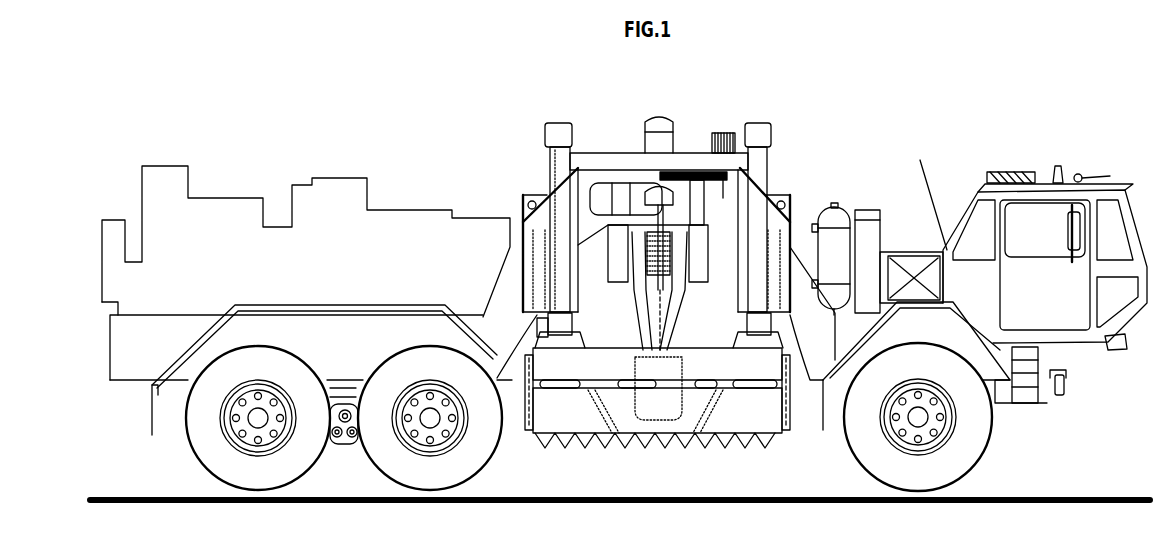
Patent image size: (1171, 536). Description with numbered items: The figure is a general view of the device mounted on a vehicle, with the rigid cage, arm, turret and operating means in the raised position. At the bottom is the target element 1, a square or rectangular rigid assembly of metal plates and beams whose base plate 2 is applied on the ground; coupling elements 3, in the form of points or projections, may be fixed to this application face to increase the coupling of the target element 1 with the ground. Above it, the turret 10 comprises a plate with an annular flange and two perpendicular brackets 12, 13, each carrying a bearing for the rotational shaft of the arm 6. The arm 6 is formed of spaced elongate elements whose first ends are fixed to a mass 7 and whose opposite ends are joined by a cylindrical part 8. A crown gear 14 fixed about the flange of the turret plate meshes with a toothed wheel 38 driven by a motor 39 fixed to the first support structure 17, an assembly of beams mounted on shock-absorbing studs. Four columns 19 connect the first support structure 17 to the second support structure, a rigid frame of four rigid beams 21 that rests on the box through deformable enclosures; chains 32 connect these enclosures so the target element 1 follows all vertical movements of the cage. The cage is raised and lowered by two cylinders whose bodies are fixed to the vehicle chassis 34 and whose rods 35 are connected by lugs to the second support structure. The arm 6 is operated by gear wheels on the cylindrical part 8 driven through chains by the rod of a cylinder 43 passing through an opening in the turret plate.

The target element 1 is at (544, 445).
The base plate 2 is at (590, 428).
The coupling elements 3 is at (618, 442).
The arm 6 is at (676, 305).
The mass 7 is at (670, 410).
The cylindrical part 8 is at (667, 238).
The turret 10 is at (698, 298).
The bracket 12 is at (615, 252).
The bracket 13 is at (703, 255).
The crown gear 14 is at (692, 167).
The first support structure 17 is at (590, 165).
The columns 19 is at (768, 158).
The rigid beams 21 is at (607, 360).
The chains 32 is at (791, 405).
The chassis 34 is at (560, 206).
The rods 35 is at (538, 325).
The toothed wheel 38 is at (722, 181).
The motor 39 is at (725, 132).
The cylinder 43 is at (638, 119).